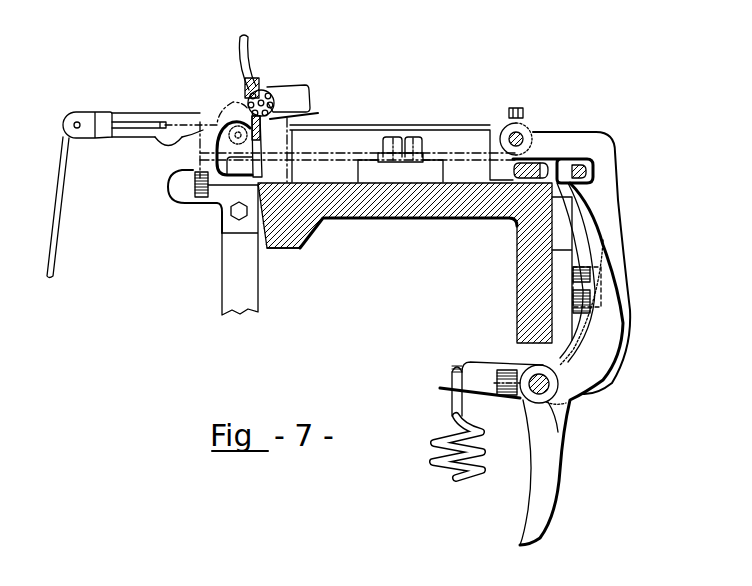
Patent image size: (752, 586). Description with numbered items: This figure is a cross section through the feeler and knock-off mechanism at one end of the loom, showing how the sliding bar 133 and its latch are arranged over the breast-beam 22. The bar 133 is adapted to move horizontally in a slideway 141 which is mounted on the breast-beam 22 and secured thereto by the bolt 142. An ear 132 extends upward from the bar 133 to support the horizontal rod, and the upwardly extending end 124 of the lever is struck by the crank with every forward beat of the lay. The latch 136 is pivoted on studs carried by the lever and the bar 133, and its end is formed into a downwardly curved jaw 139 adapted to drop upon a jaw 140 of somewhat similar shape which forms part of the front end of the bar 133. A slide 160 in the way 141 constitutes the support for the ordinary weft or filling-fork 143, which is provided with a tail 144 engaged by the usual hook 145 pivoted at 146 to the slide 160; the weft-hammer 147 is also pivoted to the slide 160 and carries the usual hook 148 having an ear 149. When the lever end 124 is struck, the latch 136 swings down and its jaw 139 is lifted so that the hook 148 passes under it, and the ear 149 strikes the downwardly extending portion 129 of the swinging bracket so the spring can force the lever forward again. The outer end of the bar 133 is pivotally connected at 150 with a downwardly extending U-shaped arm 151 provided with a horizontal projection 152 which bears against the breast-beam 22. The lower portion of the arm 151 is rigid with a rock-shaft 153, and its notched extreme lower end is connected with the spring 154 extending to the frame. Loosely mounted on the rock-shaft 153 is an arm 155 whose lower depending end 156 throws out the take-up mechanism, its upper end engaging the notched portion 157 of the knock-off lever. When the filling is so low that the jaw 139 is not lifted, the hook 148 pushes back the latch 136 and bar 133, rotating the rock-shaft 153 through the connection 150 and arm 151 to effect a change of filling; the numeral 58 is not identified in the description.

The breast-beam 22 is at (463, 218).
The body block 58 is at (490, 216).
The upwardly extending end of lever 124 is at (249, 56).
The downwardly extending portion of swinging bracket 129 is at (250, 178).
The ear 132 is at (308, 112).
The bar 133 is at (441, 130).
The latch 136 is at (288, 97).
The downwardly curved jaw of latch 139 is at (198, 157).
The jaw of bar 140 is at (244, 146).
The slideway 141 is at (380, 140).
The bolt 142 is at (386, 208).
The weft or filling-fork 143 is at (94, 139).
The tail 144 is at (142, 126).
The hook 145 is at (150, 136).
The pivot 146 is at (237, 128).
The weft-hammer 147 is at (222, 268).
The hook of weft-hammer 148 is at (170, 187).
The ear 149 is at (193, 193).
The pivotal connection 150 is at (519, 140).
The U-shaped arm 151 is at (619, 221).
The horizontal projection 152 is at (556, 186).
The rock-shaft 153 is at (549, 388).
The spring 154 is at (478, 480).
The arm 155 is at (612, 290).
The lower depending end of arm 156 is at (566, 462).
The notched portion of knock-off lever 157 is at (590, 171).
The slide 160 is at (504, 130).